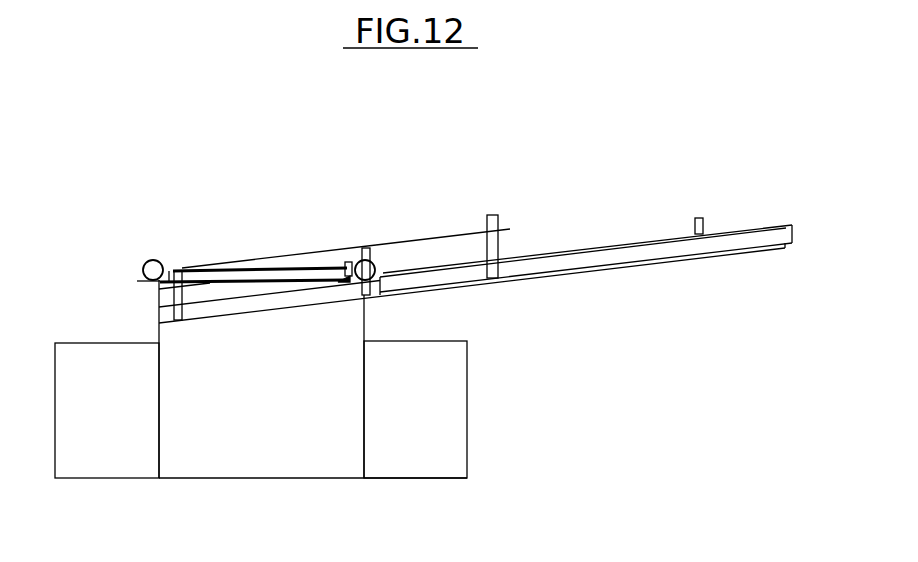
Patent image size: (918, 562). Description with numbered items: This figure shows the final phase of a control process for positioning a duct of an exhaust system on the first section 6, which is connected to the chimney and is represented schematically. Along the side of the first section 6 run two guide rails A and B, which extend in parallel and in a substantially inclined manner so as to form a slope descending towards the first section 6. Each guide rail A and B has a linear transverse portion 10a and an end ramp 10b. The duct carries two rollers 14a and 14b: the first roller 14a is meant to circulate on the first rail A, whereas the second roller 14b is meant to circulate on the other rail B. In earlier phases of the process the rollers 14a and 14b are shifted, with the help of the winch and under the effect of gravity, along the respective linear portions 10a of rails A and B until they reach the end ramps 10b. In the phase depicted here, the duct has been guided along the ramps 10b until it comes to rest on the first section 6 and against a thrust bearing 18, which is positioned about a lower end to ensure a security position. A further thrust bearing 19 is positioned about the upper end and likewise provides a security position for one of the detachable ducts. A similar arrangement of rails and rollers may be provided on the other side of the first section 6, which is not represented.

The first section 6 is at (254, 421).
The thrust bearing 18 is at (335, 290).
The first roller 14a is at (156, 262).
The second roller 14b is at (361, 261).
The end ramp 10b is at (173, 268).
The linear transverse portion 10a is at (510, 257).
The first guide rail A is at (504, 232).
The second guide rail B is at (745, 229).
The thrust bearing 19 is at (695, 233).